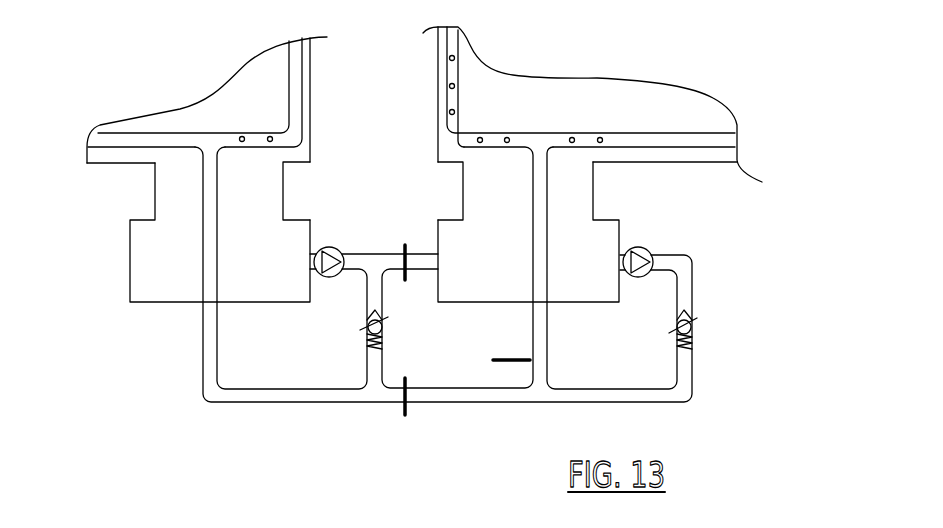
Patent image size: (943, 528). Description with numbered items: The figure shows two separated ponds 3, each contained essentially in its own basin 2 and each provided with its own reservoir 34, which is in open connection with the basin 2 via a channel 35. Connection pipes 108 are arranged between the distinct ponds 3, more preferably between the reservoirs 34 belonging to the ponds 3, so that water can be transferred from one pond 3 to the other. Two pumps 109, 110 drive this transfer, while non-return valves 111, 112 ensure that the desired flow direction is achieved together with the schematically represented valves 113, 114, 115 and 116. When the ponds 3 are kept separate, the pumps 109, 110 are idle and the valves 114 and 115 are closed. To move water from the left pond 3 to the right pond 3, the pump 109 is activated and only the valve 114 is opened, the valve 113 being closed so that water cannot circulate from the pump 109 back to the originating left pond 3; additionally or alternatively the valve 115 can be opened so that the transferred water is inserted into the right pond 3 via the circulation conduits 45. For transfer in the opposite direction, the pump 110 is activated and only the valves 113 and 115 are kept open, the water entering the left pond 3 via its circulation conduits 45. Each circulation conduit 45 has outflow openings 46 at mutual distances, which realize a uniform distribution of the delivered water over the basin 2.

The basin 2 is at (125, 153).
The pond 3 is at (723, 158).
The reservoir 34 is at (137, 288).
The channel 35 is at (262, 183).
The circulation conduit 45 is at (440, 70).
The outflow openings 46 is at (449, 86).
The connection pipes 108 is at (428, 270).
The pump 109 is at (337, 243).
The pump 110 is at (645, 248).
The non-return valve 111 is at (361, 330).
The non-return valve 112 is at (694, 313).
The valve 113 is at (208, 352).
The valve 114 is at (420, 244).
The valve 115 is at (403, 410).
The valve 116 is at (515, 357).